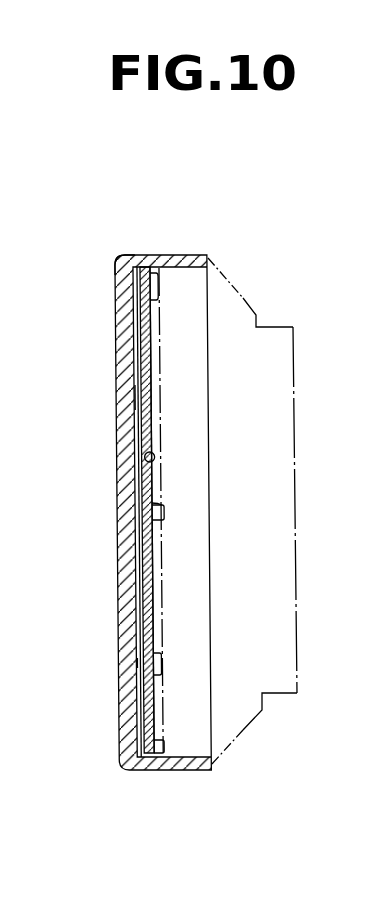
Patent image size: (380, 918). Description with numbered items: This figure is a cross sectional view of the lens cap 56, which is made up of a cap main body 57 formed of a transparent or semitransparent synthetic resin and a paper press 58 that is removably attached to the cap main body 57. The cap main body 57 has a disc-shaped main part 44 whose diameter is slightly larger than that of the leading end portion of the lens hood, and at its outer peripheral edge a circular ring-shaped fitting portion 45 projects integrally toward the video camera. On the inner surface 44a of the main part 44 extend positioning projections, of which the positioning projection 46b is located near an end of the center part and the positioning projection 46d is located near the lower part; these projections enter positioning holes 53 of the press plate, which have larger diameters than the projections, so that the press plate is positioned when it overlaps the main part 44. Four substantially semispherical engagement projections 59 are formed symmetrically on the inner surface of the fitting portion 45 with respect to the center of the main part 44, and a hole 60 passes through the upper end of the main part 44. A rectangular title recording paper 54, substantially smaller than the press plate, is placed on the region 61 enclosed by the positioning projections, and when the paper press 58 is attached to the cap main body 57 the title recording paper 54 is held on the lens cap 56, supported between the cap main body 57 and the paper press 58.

The main part 44 is at (143, 528).
The inner surface 44a is at (148, 612).
The fitting portion 45 is at (188, 255).
The positioning projection 46b is at (150, 505).
The positioning projection 46d is at (158, 658).
The positioning hole 53 is at (140, 664).
The title recording paper 54 is at (133, 399).
The lens cap 56 is at (287, 258).
The cap main body 57 is at (114, 272).
The paper press 58 is at (160, 432).
The engagement projection 59 is at (151, 273).
The hole 60 is at (133, 303).
The region 61 is at (143, 460).